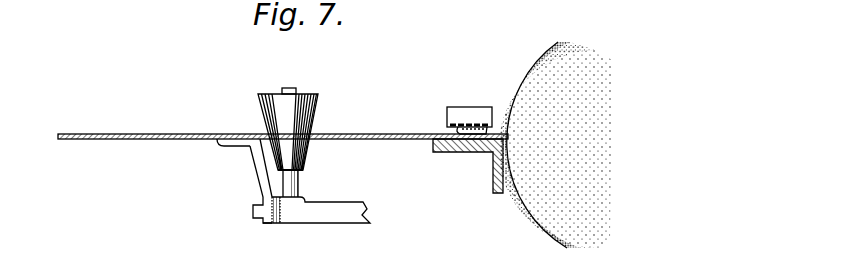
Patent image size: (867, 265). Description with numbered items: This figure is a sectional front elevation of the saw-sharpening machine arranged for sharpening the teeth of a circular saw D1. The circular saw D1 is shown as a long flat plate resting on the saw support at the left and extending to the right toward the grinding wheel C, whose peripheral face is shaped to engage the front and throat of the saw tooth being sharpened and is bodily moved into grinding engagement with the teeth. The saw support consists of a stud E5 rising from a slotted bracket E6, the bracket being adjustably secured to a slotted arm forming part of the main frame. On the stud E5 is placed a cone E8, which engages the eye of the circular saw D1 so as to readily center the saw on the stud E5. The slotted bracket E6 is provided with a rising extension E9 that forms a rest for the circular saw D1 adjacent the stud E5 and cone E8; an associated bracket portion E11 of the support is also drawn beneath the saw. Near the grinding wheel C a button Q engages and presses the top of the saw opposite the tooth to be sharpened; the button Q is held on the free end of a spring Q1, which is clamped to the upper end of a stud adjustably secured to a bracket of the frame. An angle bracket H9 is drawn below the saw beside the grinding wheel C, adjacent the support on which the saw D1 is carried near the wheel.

The circular saw D1 is at (394, 134).
The cone E8 is at (316, 112).
The rising extension E9 is at (228, 141).
The bracket arm E11 is at (248, 181).
The stud E5 is at (298, 187).
The slotted bracket E6 is at (358, 223).
The spring Q1 is at (480, 108).
The button Q is at (458, 130).
The angle bracket H9 is at (496, 172).
The grinding wheel C is at (560, 145).